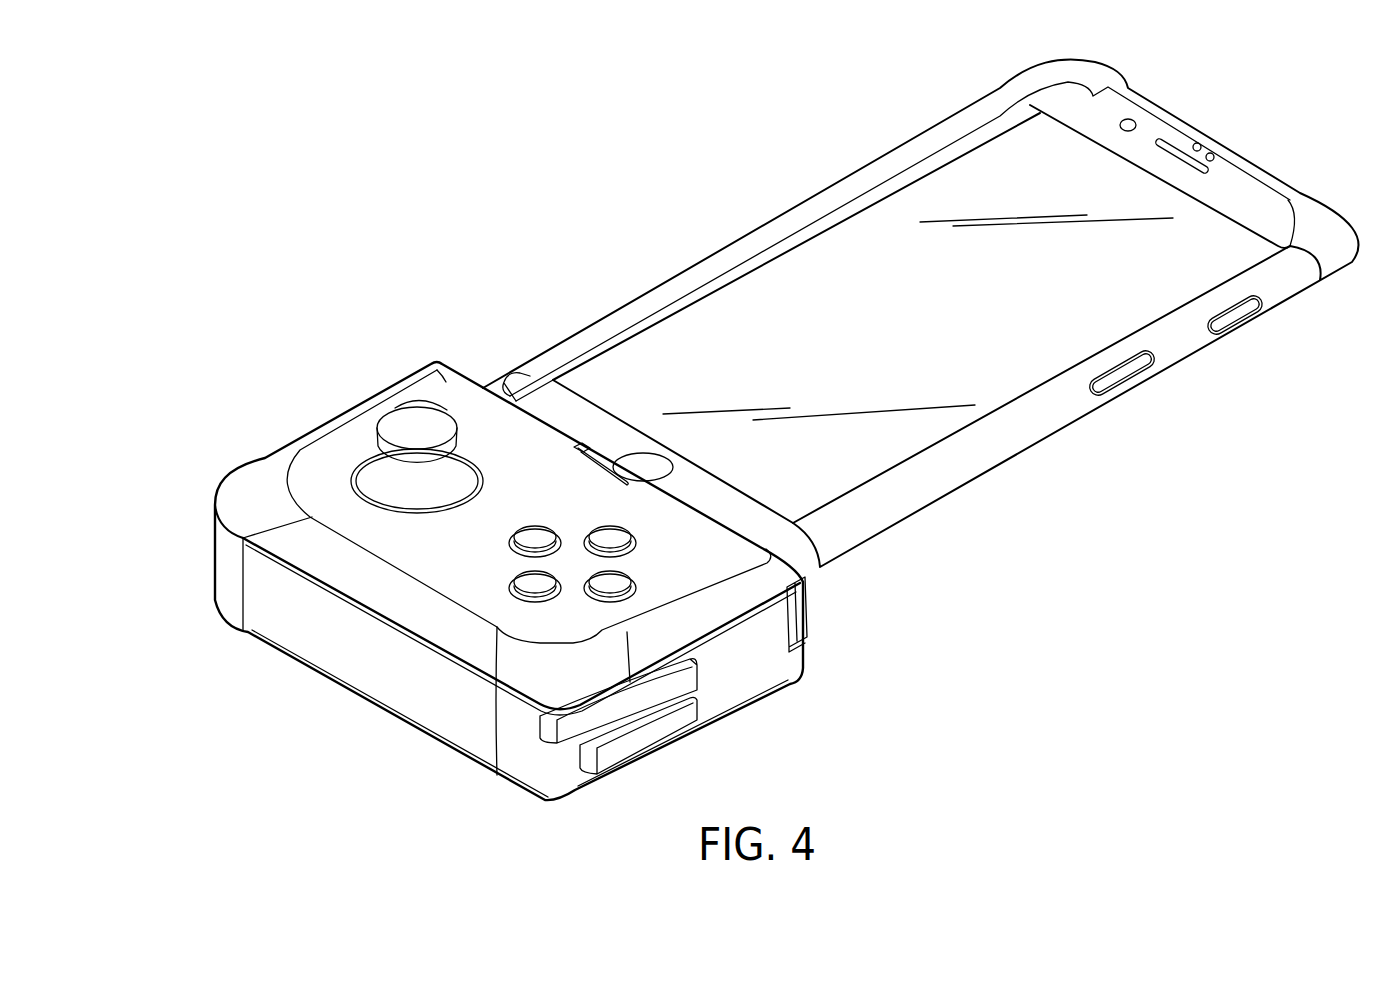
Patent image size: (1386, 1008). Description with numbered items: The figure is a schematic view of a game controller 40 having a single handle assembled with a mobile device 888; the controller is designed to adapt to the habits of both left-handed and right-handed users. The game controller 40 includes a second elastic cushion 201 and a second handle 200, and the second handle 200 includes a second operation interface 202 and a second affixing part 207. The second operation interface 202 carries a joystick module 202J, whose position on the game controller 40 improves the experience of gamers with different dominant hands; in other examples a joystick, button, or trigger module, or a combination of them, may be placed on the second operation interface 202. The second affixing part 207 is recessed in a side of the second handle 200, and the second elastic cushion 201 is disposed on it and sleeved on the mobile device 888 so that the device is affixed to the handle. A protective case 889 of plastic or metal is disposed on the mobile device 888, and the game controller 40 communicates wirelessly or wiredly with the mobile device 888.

The game controller 40 is at (319, 400).
The second handle 200 is at (210, 552).
The second elastic cushion 201 is at (806, 608).
The second operation interface 202 is at (340, 453).
The joystick module 202J is at (400, 432).
The second affixing part 207 is at (795, 527).
The mobile device 888 is at (1240, 187).
The protective case 889 is at (792, 220).